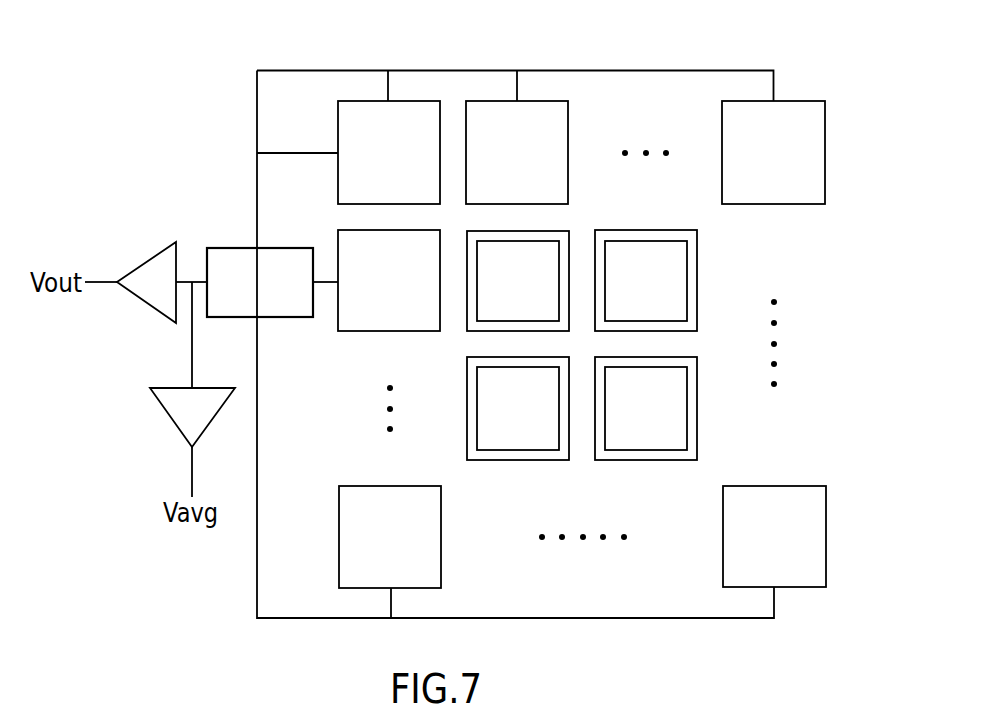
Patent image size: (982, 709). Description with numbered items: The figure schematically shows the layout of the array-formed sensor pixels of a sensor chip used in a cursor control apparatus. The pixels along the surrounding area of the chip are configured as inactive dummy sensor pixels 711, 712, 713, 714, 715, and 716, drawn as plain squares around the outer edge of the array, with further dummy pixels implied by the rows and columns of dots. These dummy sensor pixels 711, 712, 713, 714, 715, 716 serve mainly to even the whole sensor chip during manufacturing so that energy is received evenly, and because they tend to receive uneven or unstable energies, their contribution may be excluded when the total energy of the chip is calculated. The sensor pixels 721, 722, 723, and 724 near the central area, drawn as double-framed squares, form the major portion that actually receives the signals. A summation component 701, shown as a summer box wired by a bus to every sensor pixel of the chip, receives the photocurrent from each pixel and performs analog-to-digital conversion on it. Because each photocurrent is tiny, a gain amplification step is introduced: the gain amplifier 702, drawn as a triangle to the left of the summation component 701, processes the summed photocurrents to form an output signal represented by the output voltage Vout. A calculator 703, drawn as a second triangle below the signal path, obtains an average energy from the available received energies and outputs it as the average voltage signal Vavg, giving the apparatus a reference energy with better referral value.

The summation component 701 is at (230, 248).
The gain amplifier 702 is at (153, 265).
The calculator 703 is at (178, 419).
The dummy sensor pixel 711 is at (357, 100).
The dummy sensor pixel 712 is at (486, 100).
The dummy sensor pixel 713 is at (742, 100).
The dummy sensor pixel 714 is at (357, 333).
The dummy sensor pixel 715 is at (442, 564).
The dummy sensor pixel 716 is at (724, 564).
The sensor pixel 721 is at (477, 310).
The sensor pixel 722 is at (688, 258).
The sensor pixel 723 is at (477, 432).
The sensor pixel 724 is at (688, 427).